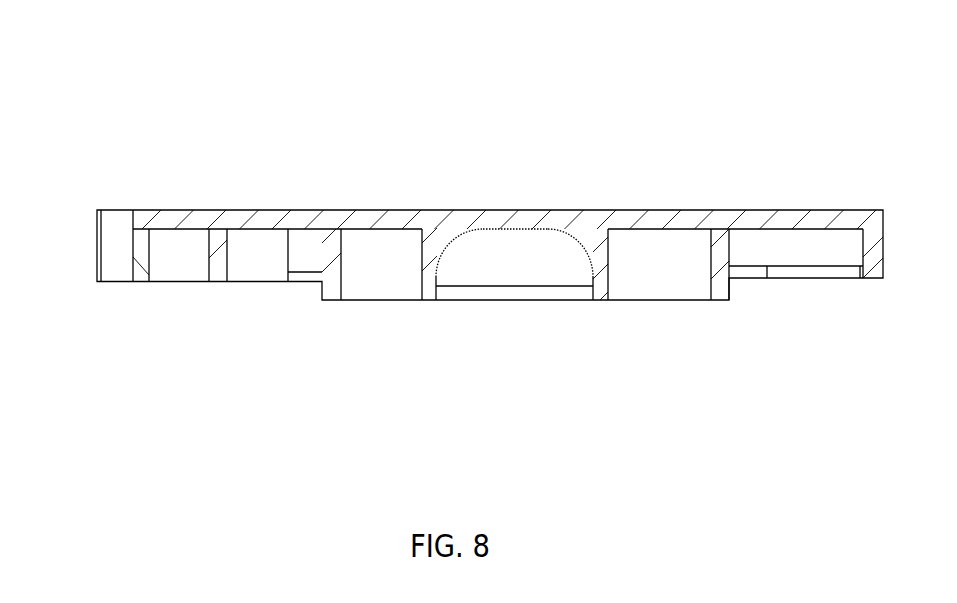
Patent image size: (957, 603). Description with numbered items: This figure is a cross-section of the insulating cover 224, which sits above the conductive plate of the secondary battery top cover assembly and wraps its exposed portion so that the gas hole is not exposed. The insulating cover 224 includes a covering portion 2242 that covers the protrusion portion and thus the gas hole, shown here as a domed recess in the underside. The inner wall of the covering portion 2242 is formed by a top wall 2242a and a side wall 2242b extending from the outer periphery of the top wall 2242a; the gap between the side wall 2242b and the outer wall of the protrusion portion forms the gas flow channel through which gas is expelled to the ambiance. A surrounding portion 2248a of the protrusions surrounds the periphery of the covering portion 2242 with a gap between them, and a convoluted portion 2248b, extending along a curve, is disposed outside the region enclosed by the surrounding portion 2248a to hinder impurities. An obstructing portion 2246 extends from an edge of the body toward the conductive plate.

The insulating cover 224 is at (65, 28).
The covering portion 2242 is at (488, 210).
The top wall 2242a is at (547, 230).
The side wall 2242b is at (447, 250).
The surrounding portion 2248a is at (330, 275).
The convoluted portion 2248b is at (216, 272).
The obstructing portion 2246 is at (872, 265).